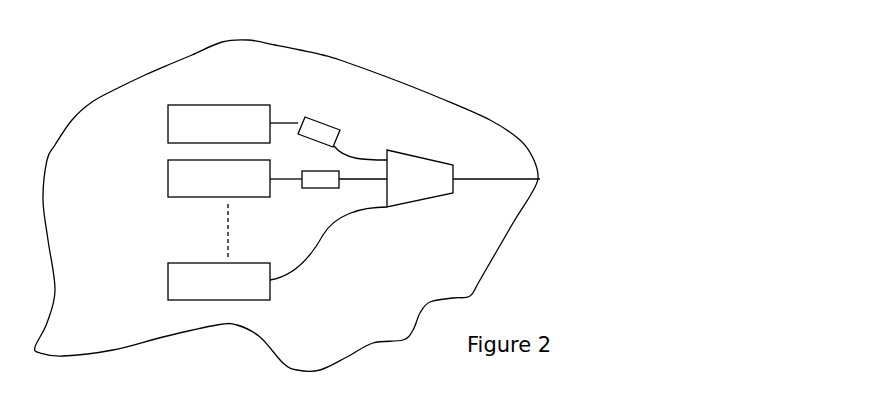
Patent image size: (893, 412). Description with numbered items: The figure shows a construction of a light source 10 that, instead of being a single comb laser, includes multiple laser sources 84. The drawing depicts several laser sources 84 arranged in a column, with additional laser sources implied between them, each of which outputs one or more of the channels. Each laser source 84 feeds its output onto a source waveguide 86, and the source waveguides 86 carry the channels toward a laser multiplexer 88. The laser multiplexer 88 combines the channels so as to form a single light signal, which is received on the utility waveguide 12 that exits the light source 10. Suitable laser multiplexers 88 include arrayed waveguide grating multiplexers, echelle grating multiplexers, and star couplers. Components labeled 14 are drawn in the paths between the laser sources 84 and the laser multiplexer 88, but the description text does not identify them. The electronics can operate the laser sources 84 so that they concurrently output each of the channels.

The light source 10 is at (373, 95).
The utility waveguide 12 is at (520, 180).
The optical modulator 14 is at (328, 118).
The laser source 84 is at (218, 105).
The source waveguide 86 is at (293, 181).
The laser multiplexer 88 is at (411, 153).